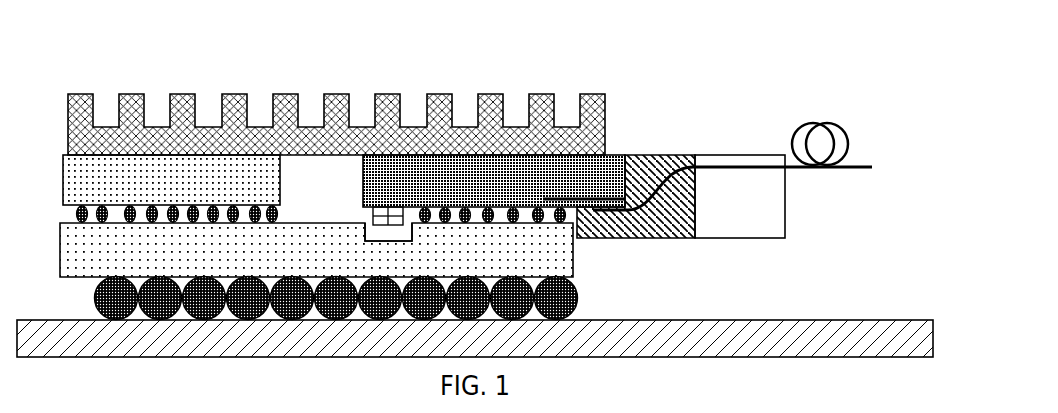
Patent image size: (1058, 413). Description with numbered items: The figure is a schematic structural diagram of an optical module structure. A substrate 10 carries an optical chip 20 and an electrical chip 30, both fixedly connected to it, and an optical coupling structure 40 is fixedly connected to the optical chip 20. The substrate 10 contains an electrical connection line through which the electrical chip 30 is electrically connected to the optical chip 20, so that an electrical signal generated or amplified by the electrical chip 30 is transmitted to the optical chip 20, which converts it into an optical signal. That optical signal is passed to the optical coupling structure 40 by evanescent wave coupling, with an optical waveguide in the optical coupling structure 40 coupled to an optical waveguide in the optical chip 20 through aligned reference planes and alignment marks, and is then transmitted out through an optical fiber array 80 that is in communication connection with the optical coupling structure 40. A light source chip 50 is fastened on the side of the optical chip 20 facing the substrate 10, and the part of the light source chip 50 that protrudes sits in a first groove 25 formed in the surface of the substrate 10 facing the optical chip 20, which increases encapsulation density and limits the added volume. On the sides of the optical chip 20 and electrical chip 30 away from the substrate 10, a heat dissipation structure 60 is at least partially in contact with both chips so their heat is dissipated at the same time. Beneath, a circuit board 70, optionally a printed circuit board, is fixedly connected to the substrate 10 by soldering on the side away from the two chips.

The substrate 10 is at (572, 263).
The optical chip 20 is at (425, 180).
The first groove 25 is at (388, 240).
The electrical chip 30 is at (168, 175).
The optical coupling structure 40 is at (655, 163).
The light source chip 50 is at (385, 220).
The heat dissipation structure 60 is at (333, 112).
The circuit board 70 is at (740, 340).
The optical fiber array 80 is at (735, 158).